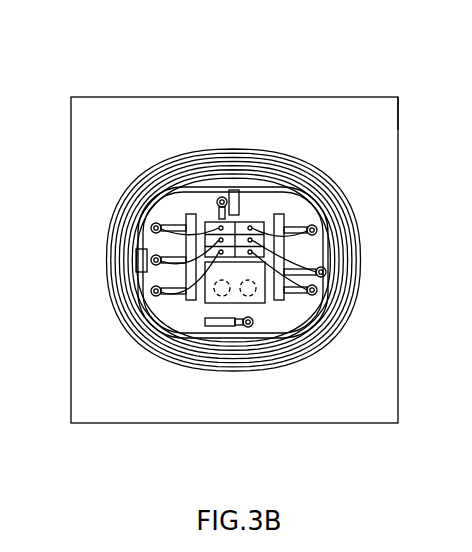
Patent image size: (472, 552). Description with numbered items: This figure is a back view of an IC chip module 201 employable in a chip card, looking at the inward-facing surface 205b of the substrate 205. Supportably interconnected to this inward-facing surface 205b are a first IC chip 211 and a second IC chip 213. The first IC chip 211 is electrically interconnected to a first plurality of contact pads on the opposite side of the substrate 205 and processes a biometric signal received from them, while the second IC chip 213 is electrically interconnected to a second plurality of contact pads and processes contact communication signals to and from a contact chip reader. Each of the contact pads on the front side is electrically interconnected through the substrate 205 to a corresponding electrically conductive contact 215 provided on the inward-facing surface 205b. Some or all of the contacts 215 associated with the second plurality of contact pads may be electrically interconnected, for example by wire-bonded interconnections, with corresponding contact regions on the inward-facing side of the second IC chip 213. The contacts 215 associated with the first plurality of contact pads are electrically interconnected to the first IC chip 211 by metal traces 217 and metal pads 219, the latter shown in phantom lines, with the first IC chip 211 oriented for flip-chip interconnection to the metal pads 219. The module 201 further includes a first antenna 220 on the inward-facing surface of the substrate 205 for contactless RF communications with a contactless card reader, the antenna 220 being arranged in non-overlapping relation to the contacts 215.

The IC chip module 201 is at (300, 70).
The substrate 205 is at (118, 97).
The inward-facing surface 205b is at (366, 108).
The first IC chip 211 is at (205, 297).
The second IC chip 213 is at (252, 220).
The electrically conductive contacts 215 is at (218, 199).
The metal traces 217 is at (201, 280).
The metal pads 219 is at (247, 297).
The first antenna 220 is at (328, 335).